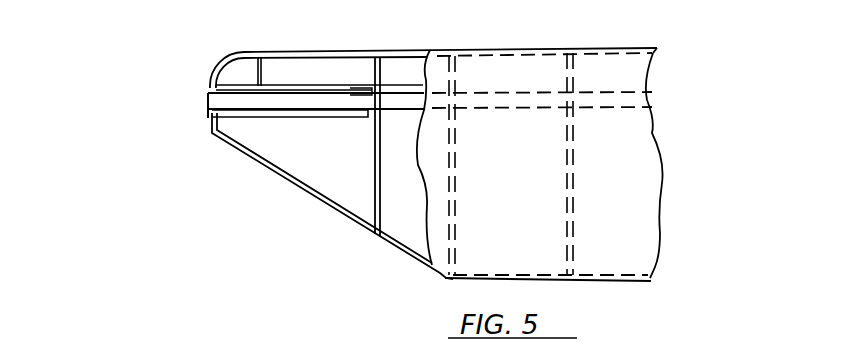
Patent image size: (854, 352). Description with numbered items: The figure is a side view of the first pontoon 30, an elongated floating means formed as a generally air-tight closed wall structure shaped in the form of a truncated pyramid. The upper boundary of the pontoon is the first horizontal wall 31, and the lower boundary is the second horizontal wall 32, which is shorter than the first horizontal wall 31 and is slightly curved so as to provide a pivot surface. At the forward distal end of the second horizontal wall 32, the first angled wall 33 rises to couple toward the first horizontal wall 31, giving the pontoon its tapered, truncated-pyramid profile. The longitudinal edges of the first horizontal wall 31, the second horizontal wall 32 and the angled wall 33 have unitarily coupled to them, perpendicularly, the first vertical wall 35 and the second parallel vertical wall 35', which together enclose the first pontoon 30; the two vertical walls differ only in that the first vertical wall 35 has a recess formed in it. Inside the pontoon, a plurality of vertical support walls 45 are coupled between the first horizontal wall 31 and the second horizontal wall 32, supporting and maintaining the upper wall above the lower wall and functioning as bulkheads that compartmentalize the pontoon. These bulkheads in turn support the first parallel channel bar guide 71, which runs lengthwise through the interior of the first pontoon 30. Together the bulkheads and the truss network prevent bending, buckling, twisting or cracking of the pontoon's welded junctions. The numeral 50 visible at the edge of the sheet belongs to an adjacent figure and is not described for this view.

The first pontoon 30 is at (643, 213).
The first horizontal wall 31 is at (493, 47).
The second horizontal wall 32 is at (608, 282).
The first angled wall 33 is at (340, 215).
The first vertical wall 35 is at (574, 171).
The second parallel vertical wall 35' is at (317, 147).
The vertical support walls 45 is at (458, 177).
The first parallel channel bar guide 71 is at (226, 102).
The partial numeral from adjacent figure 50 is at (787, 337).